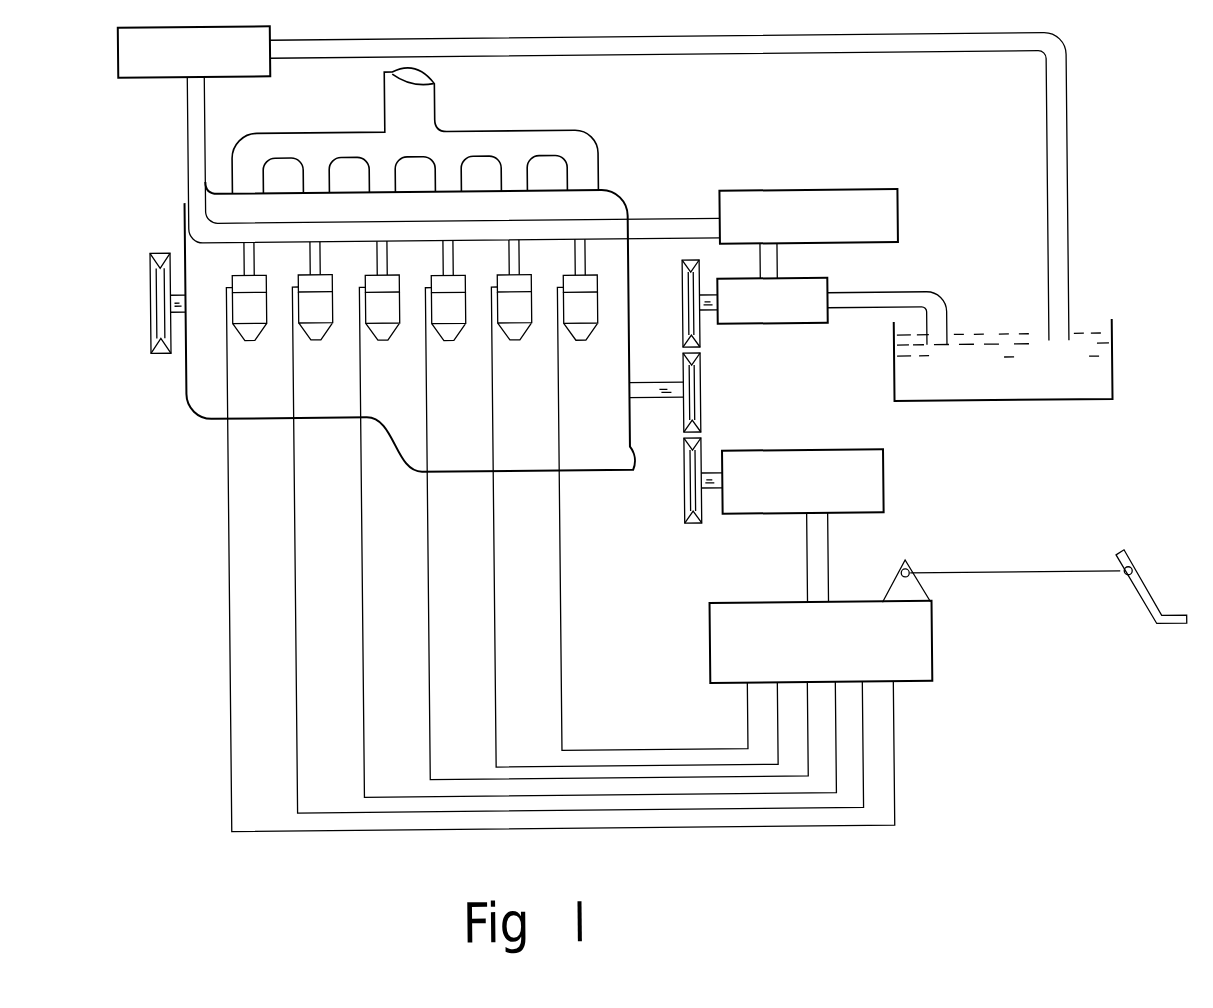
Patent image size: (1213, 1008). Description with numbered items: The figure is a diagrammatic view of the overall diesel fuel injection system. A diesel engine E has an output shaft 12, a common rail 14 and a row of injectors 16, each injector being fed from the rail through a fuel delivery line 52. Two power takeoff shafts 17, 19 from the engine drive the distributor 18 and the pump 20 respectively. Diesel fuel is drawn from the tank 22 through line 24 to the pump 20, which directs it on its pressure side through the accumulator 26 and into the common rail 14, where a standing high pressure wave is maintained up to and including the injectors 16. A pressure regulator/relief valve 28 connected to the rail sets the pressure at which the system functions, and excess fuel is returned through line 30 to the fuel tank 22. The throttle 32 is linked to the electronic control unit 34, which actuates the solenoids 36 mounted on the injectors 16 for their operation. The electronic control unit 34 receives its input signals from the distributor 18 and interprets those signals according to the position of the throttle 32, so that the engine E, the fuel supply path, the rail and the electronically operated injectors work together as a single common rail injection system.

The diesel engine E is at (642, 186).
The output shaft 12 is at (676, 401).
The common rail 14 is at (578, 228).
The injectors 16 is at (335, 306).
The power takeoff shaft 17 is at (710, 473).
The distributor 18 is at (790, 452).
The power takeoff shaft 19 is at (707, 313).
The pump 20 is at (777, 327).
The tank 22 is at (1114, 367).
The line 24 is at (904, 295).
The accumulator 26 is at (785, 194).
The pressure regulator/relief valve 28 is at (121, 61).
The line 30 is at (744, 57).
The throttle 32 is at (1121, 558).
The electronic control unit 34 is at (930, 651).
The solenoids 36 is at (300, 273).
The fuel delivery line 52 is at (246, 246).